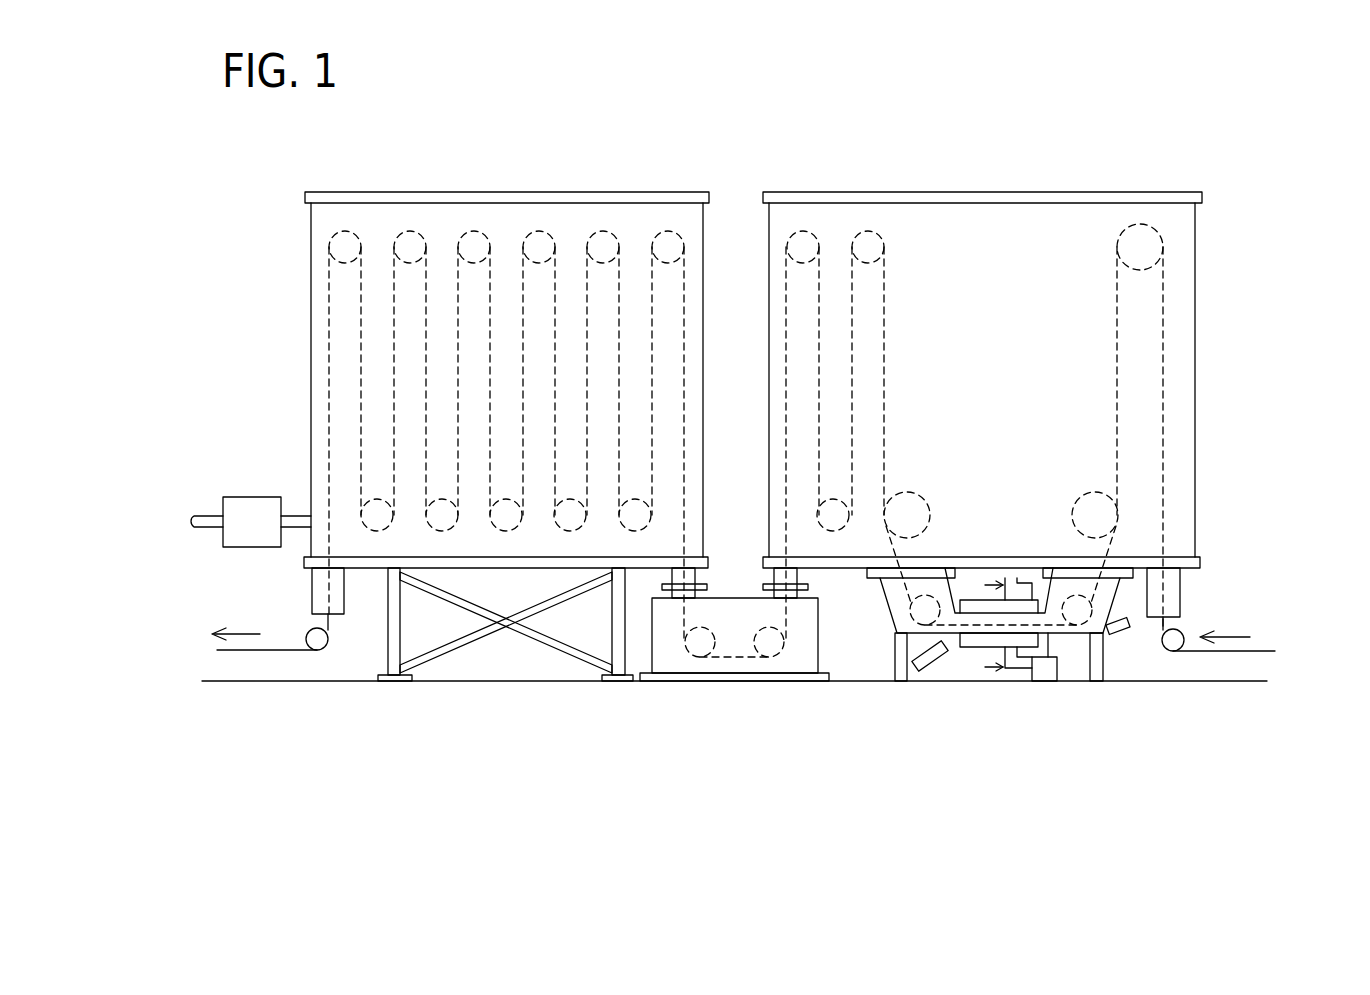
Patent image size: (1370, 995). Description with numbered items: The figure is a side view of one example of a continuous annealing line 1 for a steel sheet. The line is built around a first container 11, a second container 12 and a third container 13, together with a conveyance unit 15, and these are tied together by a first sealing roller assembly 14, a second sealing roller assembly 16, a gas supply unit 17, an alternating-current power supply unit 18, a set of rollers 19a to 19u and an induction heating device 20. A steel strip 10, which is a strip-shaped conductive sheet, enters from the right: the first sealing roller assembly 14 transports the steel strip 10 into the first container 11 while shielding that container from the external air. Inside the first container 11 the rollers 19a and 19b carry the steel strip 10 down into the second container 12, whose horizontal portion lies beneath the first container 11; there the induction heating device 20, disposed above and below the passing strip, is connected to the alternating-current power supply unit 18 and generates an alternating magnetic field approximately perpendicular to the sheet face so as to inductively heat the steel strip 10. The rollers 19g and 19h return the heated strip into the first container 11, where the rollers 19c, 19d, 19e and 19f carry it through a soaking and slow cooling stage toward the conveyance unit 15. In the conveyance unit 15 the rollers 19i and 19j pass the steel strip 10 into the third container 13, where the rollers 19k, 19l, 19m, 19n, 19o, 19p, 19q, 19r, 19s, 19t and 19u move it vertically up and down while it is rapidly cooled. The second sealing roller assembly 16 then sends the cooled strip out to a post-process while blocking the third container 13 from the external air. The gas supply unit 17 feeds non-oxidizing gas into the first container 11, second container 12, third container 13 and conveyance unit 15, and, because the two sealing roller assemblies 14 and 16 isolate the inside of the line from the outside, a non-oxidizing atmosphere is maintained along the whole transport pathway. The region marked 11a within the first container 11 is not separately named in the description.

The continuous annealing line 1 is at (915, 104).
The steel strip 10 is at (1262, 651).
The first container 11 is at (1195, 388).
The treatment liquid 11a is at (830, 357).
The second container 12 is at (1074, 640).
The third container 13 is at (311, 289).
The first sealing roller assembly 14 is at (1181, 601).
The conveyance unit 15 is at (731, 673).
The second sealing roller assembly 16 is at (312, 592).
The gas supply unit 17 is at (252, 510).
The alternating-current power supply unit 18 is at (1045, 672).
The roller 19a is at (1140, 224).
The roller 19b is at (1090, 493).
The roller 19c is at (905, 492).
The roller 19d is at (868, 231).
The roller 19e is at (829, 531).
The roller 19f is at (803, 231).
The roller 19g is at (1088, 622).
The roller 19h is at (917, 623).
The roller 19i is at (770, 657).
The roller 19j is at (695, 656).
The roller 19k is at (668, 231).
The roller 19l is at (650, 525).
The roller 19m is at (603, 231).
The roller 19n is at (564, 530).
The roller 19o is at (539, 231).
The roller 19p is at (500, 530).
The roller 19q is at (474, 231).
The roller 19r is at (436, 530).
The roller 19s is at (410, 231).
The roller 19t is at (371, 530).
The roller 19u is at (345, 231).
The induction heating device 20 is at (957, 652).